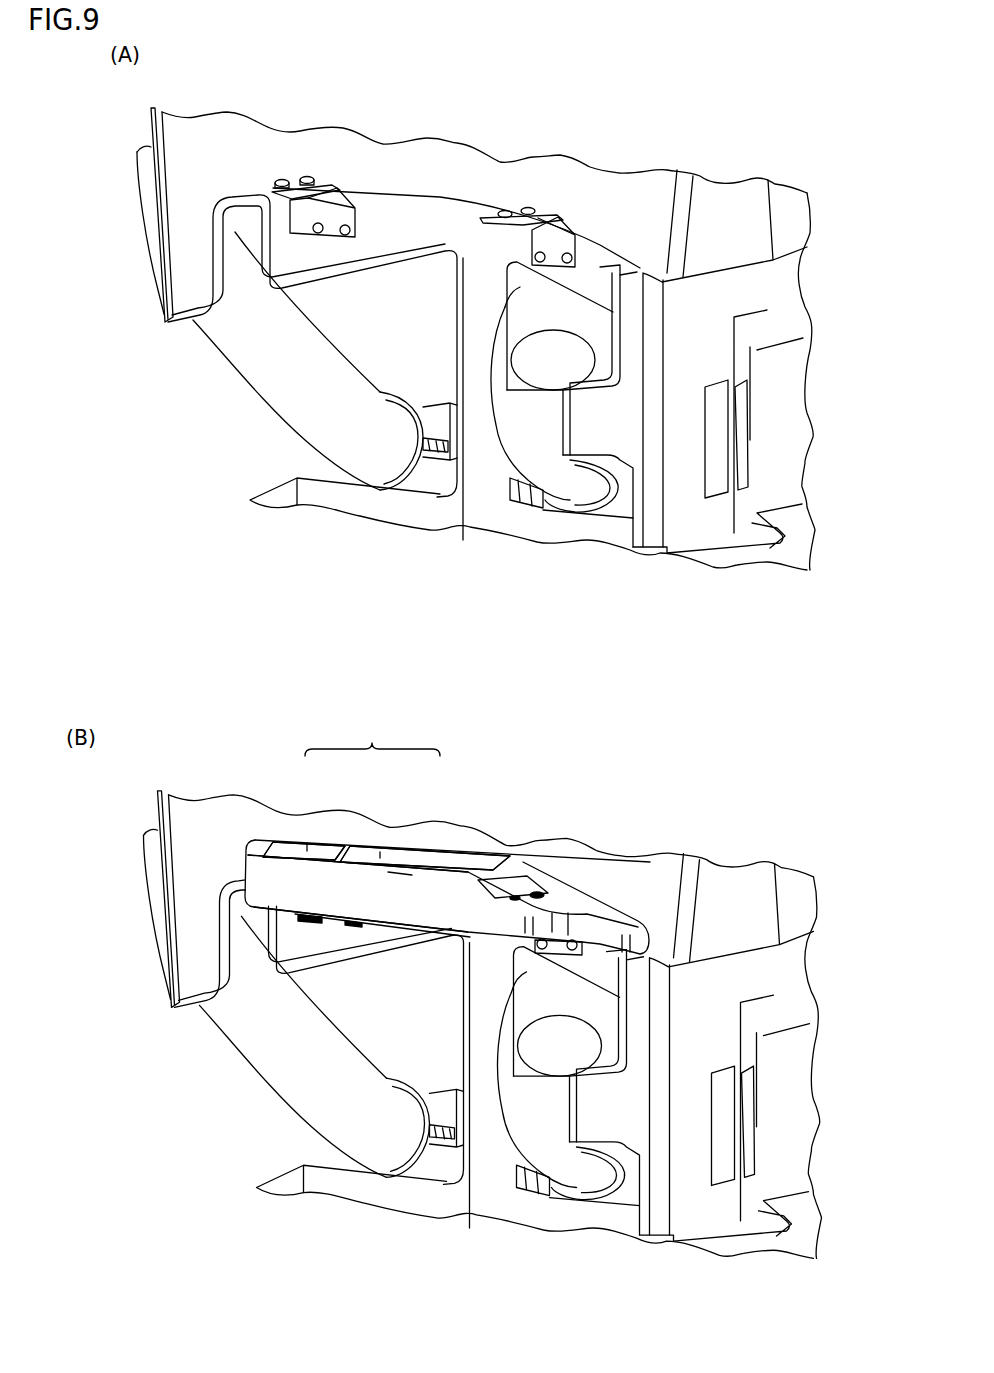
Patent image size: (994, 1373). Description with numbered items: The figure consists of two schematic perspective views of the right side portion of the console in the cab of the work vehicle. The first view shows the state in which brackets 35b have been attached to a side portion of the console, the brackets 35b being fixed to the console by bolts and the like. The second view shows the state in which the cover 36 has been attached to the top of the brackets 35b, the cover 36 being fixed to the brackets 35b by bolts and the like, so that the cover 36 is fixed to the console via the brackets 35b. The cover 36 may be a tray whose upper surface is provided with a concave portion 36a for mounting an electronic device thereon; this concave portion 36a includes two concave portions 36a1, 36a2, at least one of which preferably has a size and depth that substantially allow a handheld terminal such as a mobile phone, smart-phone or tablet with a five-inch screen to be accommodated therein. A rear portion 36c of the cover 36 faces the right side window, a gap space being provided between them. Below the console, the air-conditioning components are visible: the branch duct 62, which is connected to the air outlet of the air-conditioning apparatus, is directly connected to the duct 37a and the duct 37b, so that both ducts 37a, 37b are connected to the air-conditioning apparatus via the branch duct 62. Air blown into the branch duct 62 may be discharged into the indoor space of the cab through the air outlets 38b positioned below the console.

The bracket 35b is at (323, 182).
The cover 36 is at (272, 838).
The concave portion 36a is at (386, 796).
The concave portion 36a1 is at (403, 860).
The concave portion 36a2 is at (320, 848).
The rear portion 36c is at (272, 875).
The duct 37a is at (513, 445).
The duct 37b is at (243, 343).
The air outlet 38b is at (720, 483).
The branch duct 62 is at (443, 498).